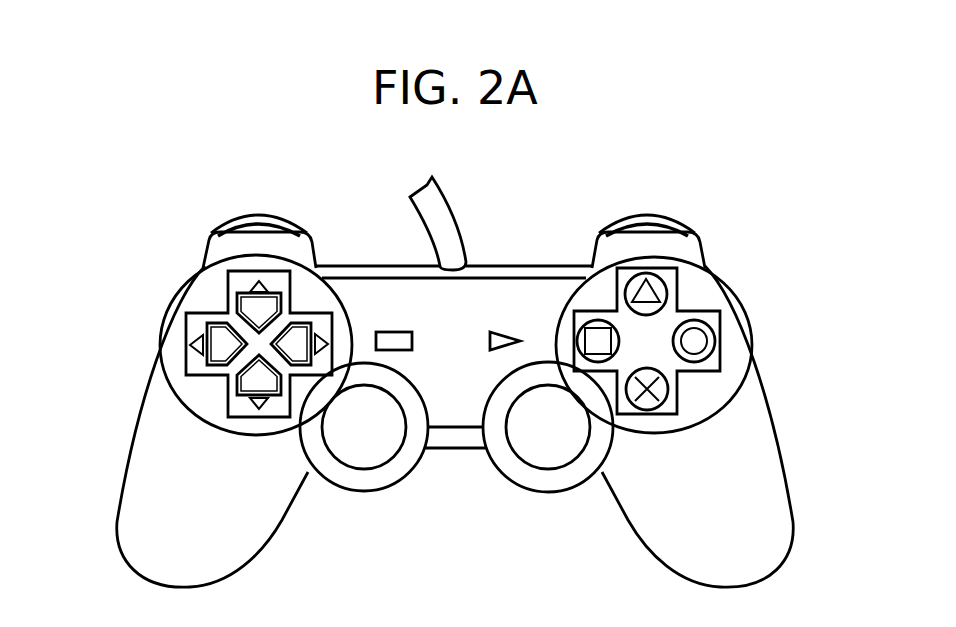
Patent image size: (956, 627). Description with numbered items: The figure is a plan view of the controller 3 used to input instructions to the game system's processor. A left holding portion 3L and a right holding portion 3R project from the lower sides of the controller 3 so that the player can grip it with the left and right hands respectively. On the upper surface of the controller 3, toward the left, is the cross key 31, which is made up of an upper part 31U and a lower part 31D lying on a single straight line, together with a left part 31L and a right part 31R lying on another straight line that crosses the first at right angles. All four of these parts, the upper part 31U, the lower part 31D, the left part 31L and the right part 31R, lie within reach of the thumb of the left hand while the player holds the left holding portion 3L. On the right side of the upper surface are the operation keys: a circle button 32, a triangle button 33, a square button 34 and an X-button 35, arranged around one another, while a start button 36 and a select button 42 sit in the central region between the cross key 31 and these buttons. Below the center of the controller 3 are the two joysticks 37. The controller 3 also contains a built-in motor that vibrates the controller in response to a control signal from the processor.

The controller 3 is at (729, 240).
The left holding portion 3L is at (158, 505).
The right holding portion 3R is at (750, 500).
The cross key 31 is at (199, 284).
The upper part 31U is at (257, 307).
The lower part 31D is at (272, 383).
The left part 31L is at (220, 334).
The right part 31R is at (297, 335).
The circle button 32 is at (702, 343).
The triangle button 33 is at (652, 286).
The square button 34 is at (600, 338).
The X-button 35 is at (665, 384).
The start button 36 is at (499, 335).
The joysticks 37 is at (543, 447).
The select button 42 is at (391, 336).